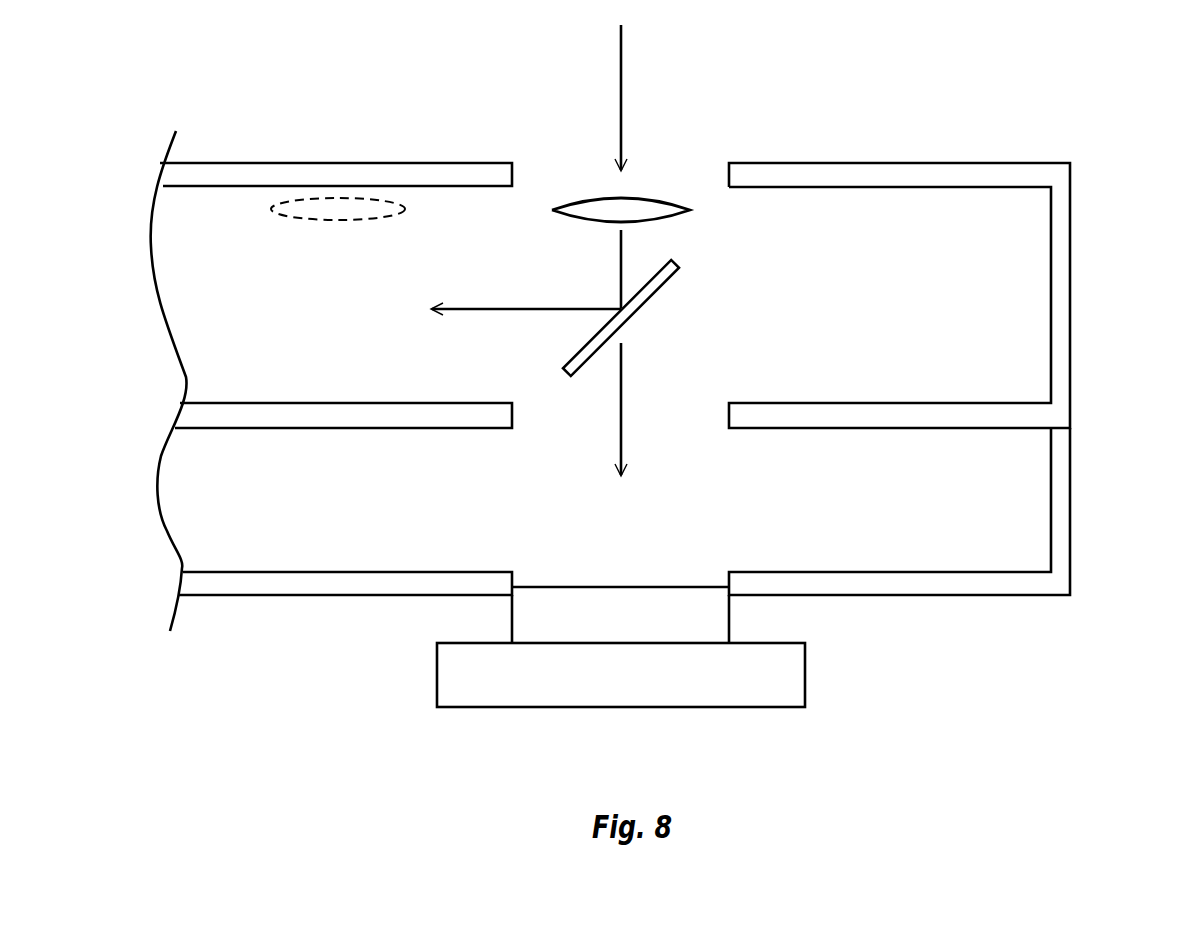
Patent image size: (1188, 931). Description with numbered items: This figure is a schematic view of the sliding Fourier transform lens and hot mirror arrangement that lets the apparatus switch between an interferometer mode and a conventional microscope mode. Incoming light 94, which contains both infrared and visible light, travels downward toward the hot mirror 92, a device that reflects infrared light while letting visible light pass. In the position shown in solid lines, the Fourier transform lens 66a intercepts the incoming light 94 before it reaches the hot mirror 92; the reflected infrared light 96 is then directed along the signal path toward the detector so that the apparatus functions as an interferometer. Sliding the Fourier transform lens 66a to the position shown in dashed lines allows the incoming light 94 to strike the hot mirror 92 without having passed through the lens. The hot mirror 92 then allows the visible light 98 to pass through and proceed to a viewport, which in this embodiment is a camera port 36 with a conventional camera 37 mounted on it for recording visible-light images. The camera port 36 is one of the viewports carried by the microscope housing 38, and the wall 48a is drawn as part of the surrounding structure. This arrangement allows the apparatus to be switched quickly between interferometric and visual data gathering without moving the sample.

The Fourier transform lens 66a is at (370, 198).
The incoming light 94 is at (619, 63).
The hot mirror 92 is at (662, 292).
The infrared light 96 is at (502, 308).
The visible light 98 is at (620, 440).
The upper housing wall 48a is at (1067, 275).
The microscope housing 38 is at (1071, 508).
The camera port 36 is at (733, 558).
The conventional camera 37 is at (805, 668).